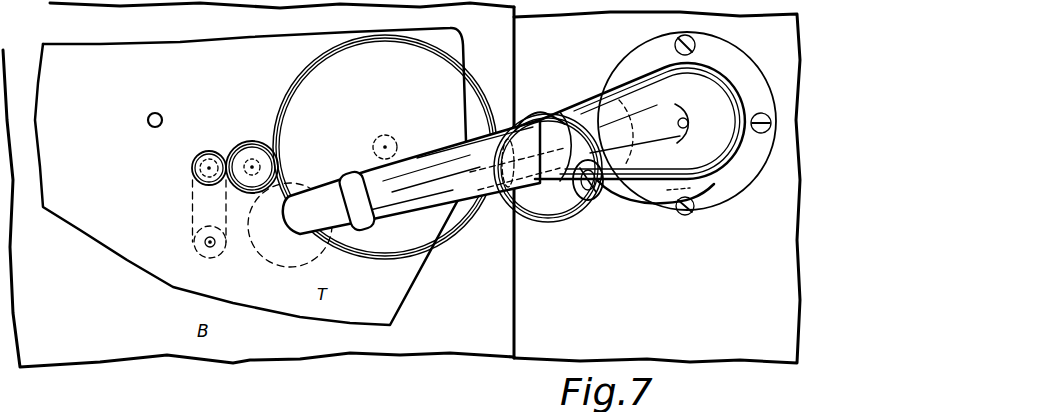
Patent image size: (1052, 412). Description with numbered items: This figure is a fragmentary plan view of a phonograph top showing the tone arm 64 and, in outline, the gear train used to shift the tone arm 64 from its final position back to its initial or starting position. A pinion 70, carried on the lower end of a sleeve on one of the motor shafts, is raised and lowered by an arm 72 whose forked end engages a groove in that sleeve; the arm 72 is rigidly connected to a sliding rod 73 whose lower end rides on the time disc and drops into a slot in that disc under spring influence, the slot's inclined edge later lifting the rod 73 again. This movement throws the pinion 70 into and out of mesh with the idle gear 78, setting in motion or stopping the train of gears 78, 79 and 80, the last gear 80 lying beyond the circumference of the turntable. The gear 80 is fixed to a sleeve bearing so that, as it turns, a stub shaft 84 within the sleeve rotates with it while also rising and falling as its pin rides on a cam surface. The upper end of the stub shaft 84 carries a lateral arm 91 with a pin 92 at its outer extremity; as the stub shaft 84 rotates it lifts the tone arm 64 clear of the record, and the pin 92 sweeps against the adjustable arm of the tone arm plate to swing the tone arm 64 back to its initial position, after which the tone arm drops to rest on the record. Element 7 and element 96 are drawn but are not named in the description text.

The stud 7 is at (150, 128).
The tone arm 64 is at (419, 213).
The pinion 70 is at (216, 150).
The arm 72 is at (197, 217).
The sliding rod 73 is at (209, 253).
The idle gear 78 is at (249, 142).
The gear 79 is at (307, 78).
The gear 80 is at (559, 222).
The stub shaft 84 is at (549, 191).
The lateral arm 91 is at (531, 190).
The pin 92 is at (494, 193).
The boss 96 is at (573, 147).